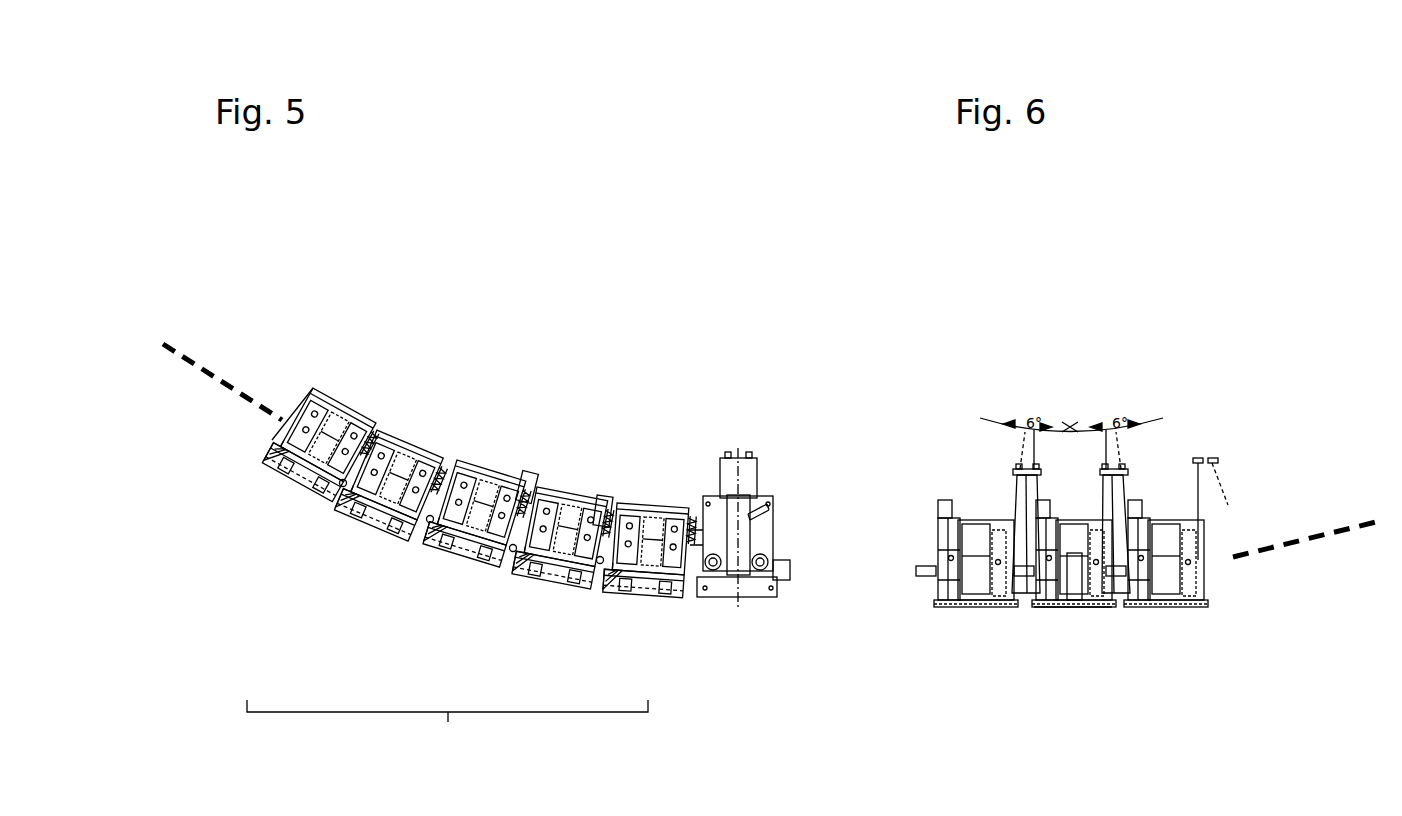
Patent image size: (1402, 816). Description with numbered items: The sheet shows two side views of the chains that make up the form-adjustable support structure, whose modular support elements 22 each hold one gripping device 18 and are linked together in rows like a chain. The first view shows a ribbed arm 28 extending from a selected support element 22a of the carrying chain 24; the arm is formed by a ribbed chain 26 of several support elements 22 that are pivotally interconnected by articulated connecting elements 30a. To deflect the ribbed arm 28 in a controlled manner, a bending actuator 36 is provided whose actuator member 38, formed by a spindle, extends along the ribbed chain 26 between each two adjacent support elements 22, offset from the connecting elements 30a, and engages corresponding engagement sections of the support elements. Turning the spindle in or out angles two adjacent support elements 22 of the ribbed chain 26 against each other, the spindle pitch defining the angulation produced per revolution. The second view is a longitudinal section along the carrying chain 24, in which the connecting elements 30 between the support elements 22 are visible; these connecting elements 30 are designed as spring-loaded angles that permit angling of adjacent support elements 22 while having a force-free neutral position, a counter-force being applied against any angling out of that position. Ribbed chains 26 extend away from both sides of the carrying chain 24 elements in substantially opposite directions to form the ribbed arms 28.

In FIG. 6, the gripping device 18 is at (1058, 628).
In FIG. 5, the support element 22 is at (292, 430).
In FIG. 6, the support element 22 is at (938, 570).
In FIG. 5, the selected support element 22a is at (766, 518).
In FIG. 6, the carrying chain 24 is at (1281, 548).
In FIG. 5, the ribbed chain 26 is at (192, 378).
In FIG. 5, the ribbed arm 28 is at (447, 728).
In FIG. 5, the connecting element 30 is at (748, 476).
In FIG. 6, the connecting element 30 is at (1013, 497).
In FIG. 5, the connecting element 30a is at (343, 487).
In FIG. 5, the bending actuator 36 is at (572, 432).
In FIG. 5, the actuator member 38 is at (530, 478).